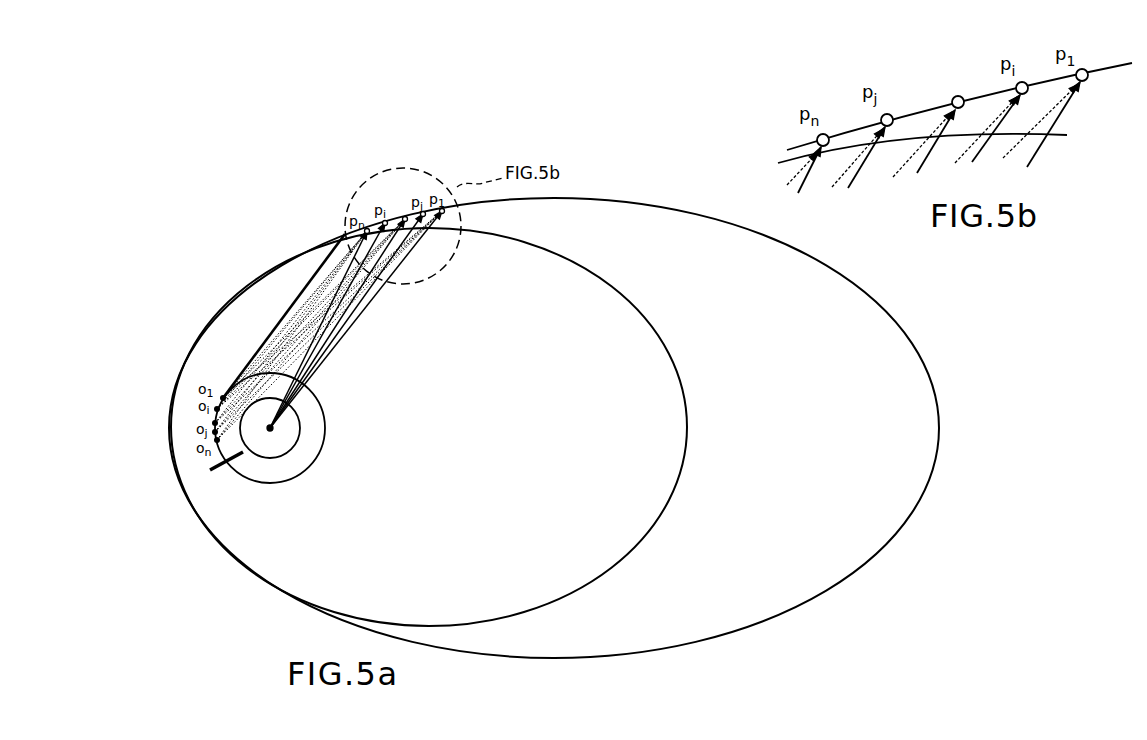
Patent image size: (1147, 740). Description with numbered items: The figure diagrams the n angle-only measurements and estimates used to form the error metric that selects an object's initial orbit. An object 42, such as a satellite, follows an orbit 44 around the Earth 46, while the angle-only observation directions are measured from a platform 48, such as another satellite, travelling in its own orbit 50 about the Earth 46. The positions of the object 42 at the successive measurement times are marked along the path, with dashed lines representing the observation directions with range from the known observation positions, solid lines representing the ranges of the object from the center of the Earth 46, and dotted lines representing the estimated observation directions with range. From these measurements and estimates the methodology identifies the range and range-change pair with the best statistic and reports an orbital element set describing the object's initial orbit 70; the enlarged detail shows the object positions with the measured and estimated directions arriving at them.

The object 42 is at (346, 235).
The orbit 44 is at (808, 258).
The Earth 46 is at (297, 447).
The platform 48 is at (227, 461).
The orbit 50 is at (325, 422).
The initial orbit 70 is at (672, 367).